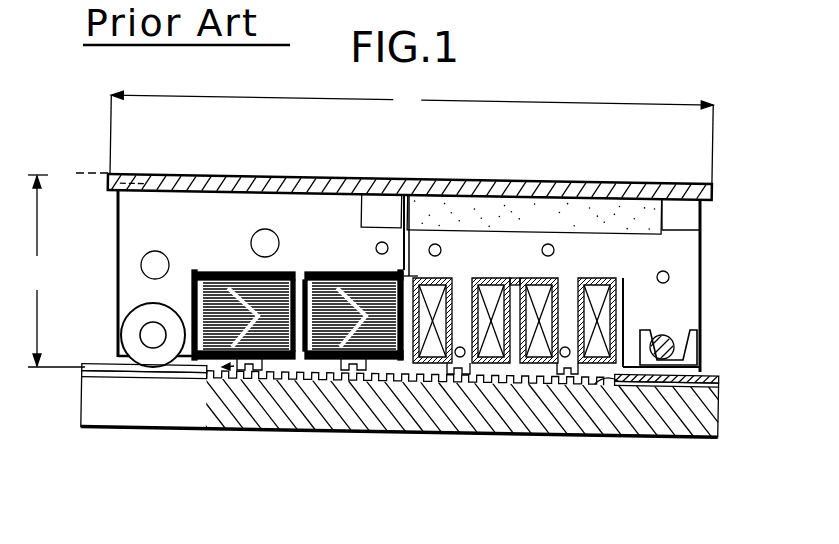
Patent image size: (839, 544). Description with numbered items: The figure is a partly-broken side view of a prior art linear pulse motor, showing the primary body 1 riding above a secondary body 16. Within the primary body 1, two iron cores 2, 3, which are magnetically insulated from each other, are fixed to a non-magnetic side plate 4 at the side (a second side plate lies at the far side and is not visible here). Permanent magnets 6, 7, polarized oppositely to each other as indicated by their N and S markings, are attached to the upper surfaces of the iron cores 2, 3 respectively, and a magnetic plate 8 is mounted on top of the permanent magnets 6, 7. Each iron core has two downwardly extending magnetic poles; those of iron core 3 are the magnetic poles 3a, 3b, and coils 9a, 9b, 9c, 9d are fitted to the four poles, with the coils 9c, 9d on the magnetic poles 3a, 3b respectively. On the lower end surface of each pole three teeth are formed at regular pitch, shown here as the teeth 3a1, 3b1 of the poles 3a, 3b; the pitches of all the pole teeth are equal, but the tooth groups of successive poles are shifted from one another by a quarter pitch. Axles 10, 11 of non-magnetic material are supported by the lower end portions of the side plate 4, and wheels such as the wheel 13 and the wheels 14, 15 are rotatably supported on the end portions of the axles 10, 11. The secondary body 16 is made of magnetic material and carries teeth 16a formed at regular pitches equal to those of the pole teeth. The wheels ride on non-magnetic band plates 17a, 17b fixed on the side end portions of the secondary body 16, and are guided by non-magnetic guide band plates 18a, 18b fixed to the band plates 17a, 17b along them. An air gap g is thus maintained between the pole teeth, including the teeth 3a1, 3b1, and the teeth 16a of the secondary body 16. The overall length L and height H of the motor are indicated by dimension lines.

The primary body 1 is at (709, 281).
The iron core 2 is at (678, 316).
The iron core 3 is at (401, 196).
The magnetic pole 3a is at (388, 360).
The teeth 3a1 is at (344, 372).
The magnetic pole 3b is at (265, 360).
The teeth 3b1 is at (243, 371).
The non-magnetic side plate 4 is at (284, 220).
The permanent magnet 6 is at (586, 215).
The permanent magnet 7 is at (362, 192).
The magnetic plate 8 is at (491, 192).
The coil 9a is at (540, 345).
The coil 9b is at (438, 345).
The coil 9c is at (333, 345).
The coil 9d is at (223, 340).
The axle 10 is at (657, 340).
The axle 11 is at (148, 337).
The wheel 13 is at (712, 415).
The wheel 14 is at (138, 318).
The wheel 15 is at (116, 331).
The secondary body 16 is at (668, 418).
The teeth 16a is at (614, 384).
The non-magnetic band plate 17a is at (127, 378).
The non-magnetic band plate 17b is at (722, 390).
The non-magnetic guide band plate 18a is at (108, 368).
The non-magnetic guide band plate 18b is at (703, 378).
The air gap g is at (218, 376).
The motor length L is at (411, 133).
The motor height H is at (68, 270).